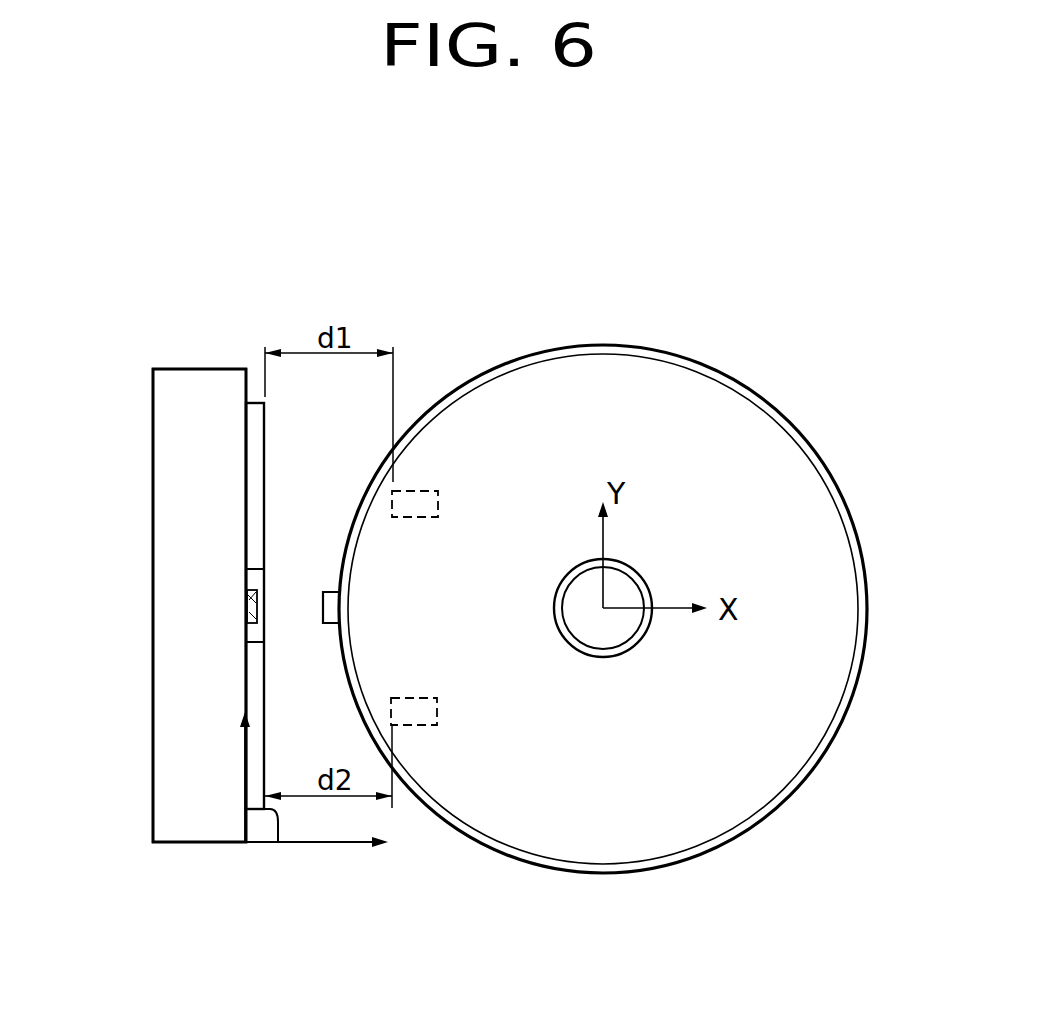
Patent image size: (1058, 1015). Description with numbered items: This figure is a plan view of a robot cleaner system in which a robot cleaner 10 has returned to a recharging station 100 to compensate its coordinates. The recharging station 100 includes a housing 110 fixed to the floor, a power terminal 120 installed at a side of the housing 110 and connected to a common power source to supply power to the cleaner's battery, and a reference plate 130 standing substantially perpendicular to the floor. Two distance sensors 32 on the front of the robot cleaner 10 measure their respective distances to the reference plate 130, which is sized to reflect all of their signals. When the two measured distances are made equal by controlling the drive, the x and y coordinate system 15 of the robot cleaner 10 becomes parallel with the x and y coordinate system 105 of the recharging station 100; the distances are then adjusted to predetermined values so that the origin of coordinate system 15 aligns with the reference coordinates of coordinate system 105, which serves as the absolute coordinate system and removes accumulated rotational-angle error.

The robot cleaner 10 is at (872, 506).
The x and y coordinate system 15 is at (603, 598).
The distance sensors 32 is at (432, 491).
The recharging station 100 is at (140, 345).
The x and y coordinate system 105 is at (324, 845).
The housing 110 is at (163, 813).
The power terminal 120 is at (247, 602).
The reference plate 130 is at (275, 843).